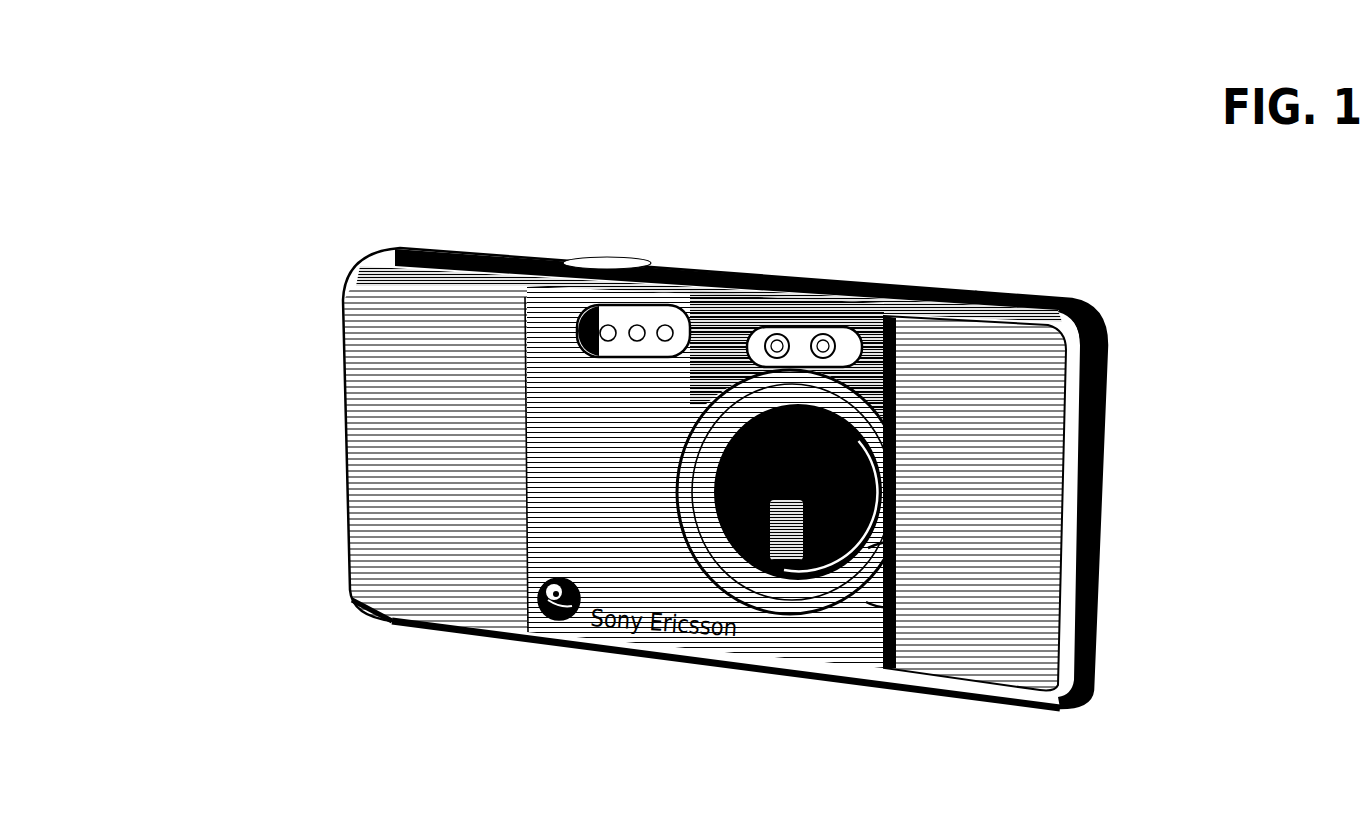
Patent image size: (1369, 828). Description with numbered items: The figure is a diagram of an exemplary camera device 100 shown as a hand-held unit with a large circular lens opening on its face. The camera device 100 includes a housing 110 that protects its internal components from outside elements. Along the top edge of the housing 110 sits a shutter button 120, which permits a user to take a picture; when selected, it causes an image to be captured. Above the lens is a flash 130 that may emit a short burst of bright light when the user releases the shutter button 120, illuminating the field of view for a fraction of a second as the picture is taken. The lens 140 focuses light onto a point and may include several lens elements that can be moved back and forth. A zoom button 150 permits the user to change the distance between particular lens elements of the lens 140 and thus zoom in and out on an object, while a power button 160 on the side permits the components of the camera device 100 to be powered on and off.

The camera device 100 is at (192, 107).
The housing 110 is at (343, 345).
The shutter button 120 is at (607, 258).
The flash 130 is at (787, 278).
The lens 140 is at (853, 437).
The zoom button 150 is at (985, 300).
The power button 160 is at (1107, 417).